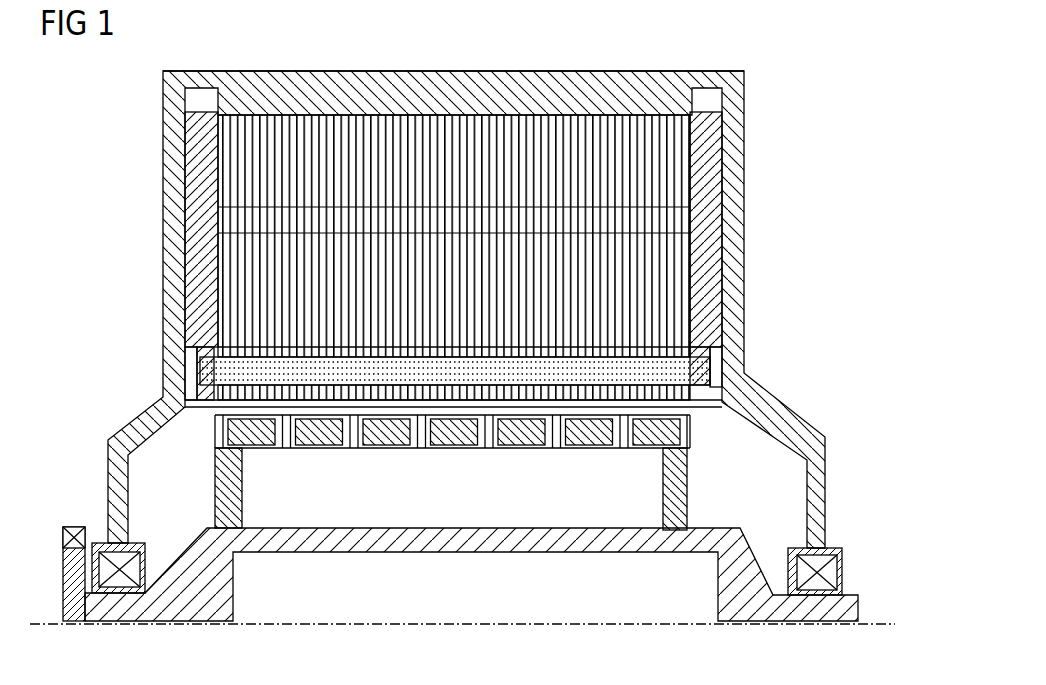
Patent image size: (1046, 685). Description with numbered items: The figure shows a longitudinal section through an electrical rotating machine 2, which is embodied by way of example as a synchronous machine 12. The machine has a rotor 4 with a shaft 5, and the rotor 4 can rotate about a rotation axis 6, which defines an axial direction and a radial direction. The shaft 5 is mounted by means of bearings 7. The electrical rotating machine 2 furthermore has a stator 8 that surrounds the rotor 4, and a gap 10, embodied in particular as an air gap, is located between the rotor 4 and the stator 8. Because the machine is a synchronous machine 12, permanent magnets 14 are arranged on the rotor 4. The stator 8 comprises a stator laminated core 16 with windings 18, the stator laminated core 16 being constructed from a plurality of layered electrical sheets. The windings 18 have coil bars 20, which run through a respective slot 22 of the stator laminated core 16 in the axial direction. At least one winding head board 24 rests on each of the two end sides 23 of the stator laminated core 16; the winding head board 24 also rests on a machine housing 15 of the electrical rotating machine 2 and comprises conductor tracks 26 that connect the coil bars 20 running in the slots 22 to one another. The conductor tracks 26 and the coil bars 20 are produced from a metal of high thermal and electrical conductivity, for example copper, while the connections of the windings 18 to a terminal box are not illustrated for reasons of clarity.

The electrical rotating machine 2 is at (486, 282).
The synchronous machine 12 is at (454, 208).
The rotor 4 is at (471, 583).
The shaft 5 is at (190, 612).
The rotation axis 6 is at (882, 623).
The bearings 7 is at (88, 518).
The stator 8 is at (756, 270).
The gap 10 is at (698, 413).
The permanent magnets 14 is at (262, 452).
The machine housing 15 is at (385, 93).
The stator laminated core 16 is at (537, 113).
The windings 18 is at (182, 373).
The coil bars 20 is at (744, 379).
The slot 22 is at (746, 403).
The end sides 23 is at (216, 185).
The winding head board 24 is at (202, 148).
The conductor tracks 26 is at (197, 403).